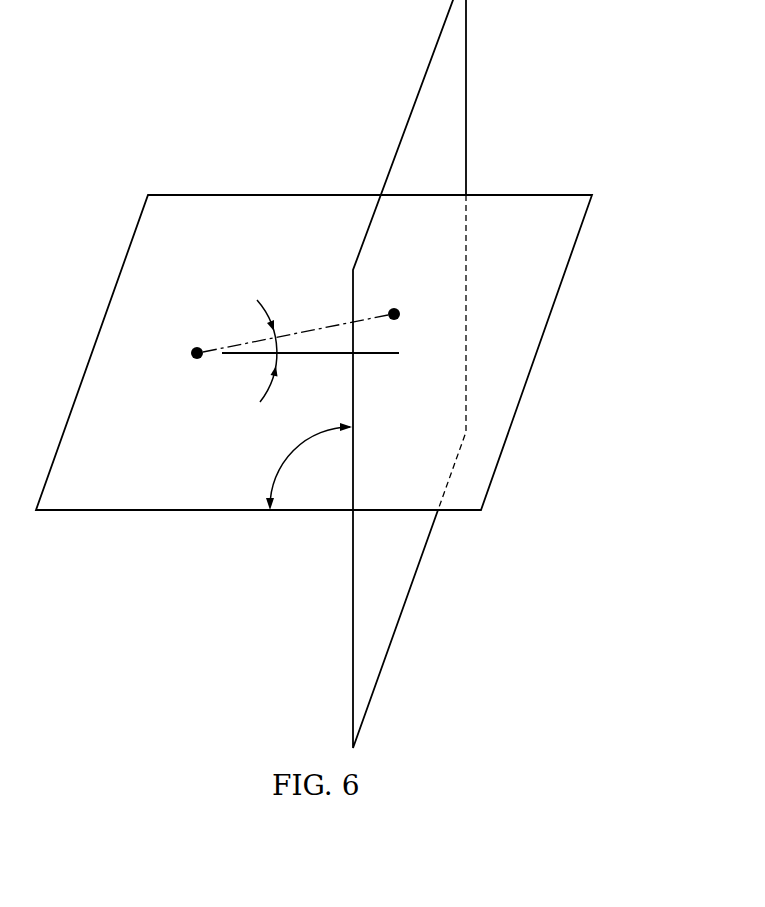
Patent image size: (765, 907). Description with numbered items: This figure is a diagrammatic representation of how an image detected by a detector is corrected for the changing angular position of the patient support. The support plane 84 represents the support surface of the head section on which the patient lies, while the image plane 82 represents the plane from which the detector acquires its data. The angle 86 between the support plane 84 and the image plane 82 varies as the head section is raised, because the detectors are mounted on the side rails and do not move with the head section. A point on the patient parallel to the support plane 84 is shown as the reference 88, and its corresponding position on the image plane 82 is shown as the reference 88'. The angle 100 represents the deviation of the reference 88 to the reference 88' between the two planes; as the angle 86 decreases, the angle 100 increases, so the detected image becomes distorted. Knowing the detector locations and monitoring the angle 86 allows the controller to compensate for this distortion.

The image plane 82 is at (467, 95).
The support plane 84 is at (212, 511).
The angle 86 is at (295, 450).
The reference point 88 is at (218, 301).
The position of reference point on image plane 88' is at (401, 381).
The angle 100 is at (281, 348).